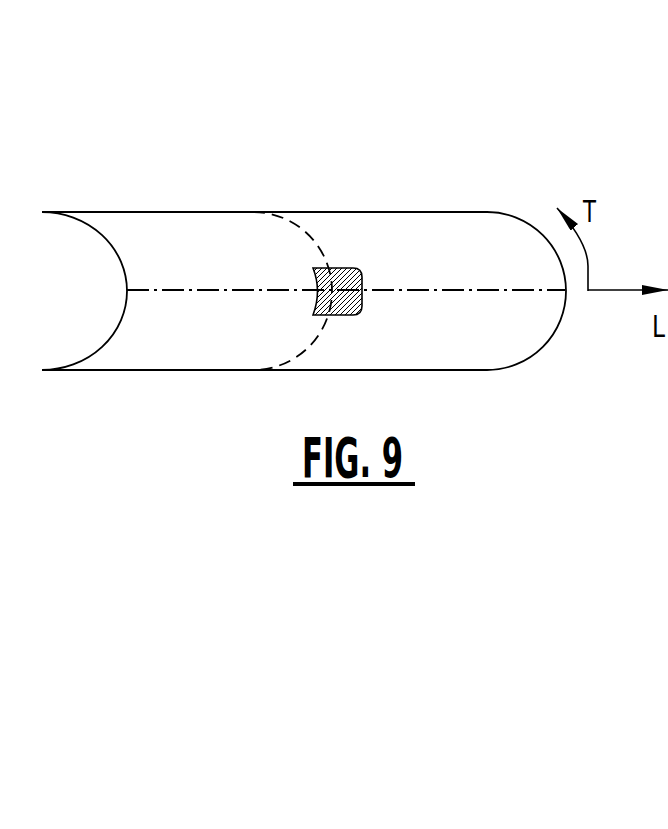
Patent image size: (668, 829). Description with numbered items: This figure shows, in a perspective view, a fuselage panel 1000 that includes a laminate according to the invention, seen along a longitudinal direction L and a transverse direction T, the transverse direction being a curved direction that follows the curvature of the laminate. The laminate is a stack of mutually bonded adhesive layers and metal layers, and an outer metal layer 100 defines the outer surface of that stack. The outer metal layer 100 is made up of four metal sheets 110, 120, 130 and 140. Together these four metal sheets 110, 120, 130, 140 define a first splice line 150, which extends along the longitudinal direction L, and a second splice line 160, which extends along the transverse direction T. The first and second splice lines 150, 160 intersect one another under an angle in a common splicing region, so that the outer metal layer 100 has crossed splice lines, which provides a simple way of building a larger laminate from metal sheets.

The sealing assembly 1000 is at (103, 178).
The outer metal layer 100 is at (528, 190).
The metal sheet 110 is at (223, 237).
The metal sheet 120 is at (460, 228).
The metal sheet 130 is at (185, 355).
The metal sheet 140 is at (429, 353).
The first splice line 150 is at (265, 297).
The second splice line 160 is at (325, 250).